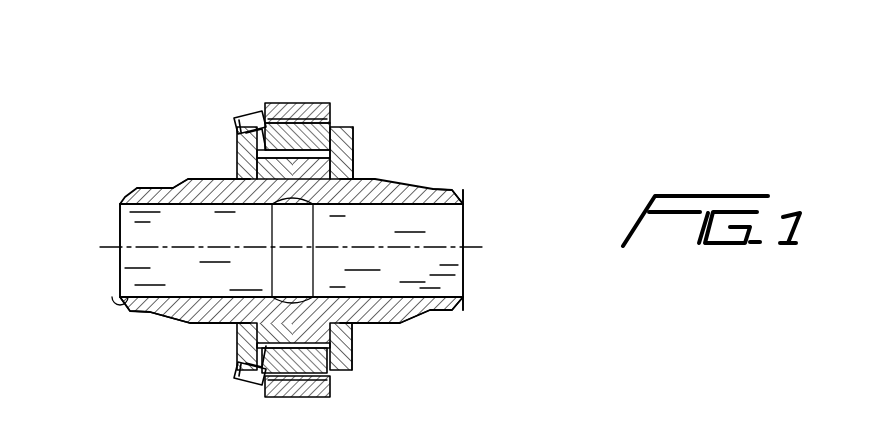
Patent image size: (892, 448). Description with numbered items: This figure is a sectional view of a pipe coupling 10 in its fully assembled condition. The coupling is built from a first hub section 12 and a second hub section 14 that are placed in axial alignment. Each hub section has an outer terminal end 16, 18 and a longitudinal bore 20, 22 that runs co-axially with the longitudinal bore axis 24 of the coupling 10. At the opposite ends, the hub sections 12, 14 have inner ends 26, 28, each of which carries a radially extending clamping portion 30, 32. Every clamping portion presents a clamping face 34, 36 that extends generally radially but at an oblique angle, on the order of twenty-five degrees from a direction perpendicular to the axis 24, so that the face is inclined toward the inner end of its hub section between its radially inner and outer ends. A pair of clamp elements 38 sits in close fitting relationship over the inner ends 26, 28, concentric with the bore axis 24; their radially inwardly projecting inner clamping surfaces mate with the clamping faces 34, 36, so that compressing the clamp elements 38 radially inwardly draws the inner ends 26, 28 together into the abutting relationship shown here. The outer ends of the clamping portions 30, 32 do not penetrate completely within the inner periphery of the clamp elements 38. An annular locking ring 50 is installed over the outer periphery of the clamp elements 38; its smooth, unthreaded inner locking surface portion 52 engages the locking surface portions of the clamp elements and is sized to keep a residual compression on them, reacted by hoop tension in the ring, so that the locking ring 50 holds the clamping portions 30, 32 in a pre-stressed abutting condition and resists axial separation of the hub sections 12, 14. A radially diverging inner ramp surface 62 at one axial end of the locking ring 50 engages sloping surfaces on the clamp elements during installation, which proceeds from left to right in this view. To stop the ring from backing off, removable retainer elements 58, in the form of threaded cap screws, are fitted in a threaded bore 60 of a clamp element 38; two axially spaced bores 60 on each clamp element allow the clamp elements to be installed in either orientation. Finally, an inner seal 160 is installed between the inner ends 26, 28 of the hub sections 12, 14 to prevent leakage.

The pipe coupling 10 is at (421, 147).
The first hub section 12 is at (172, 185).
The second hub section 14 is at (432, 184).
The outer terminal end 16 is at (118, 203).
The outer terminal end 18 is at (465, 203).
The longitudinal bore 20 is at (118, 296).
The longitudinal bore 22 is at (454, 292).
The longitudinal bore axis 24 is at (484, 248).
The inner end 26 is at (250, 205).
The inner end 28 is at (332, 204).
The clamping portion 30 is at (236, 170).
The clamping portion 32 is at (297, 192).
The clamping face 34 is at (234, 180).
The clamping face 36 is at (360, 168).
The clamp elements 38 is at (337, 125).
The locking ring 50 is at (302, 103).
The inner locking surface portion 52 is at (272, 103).
The retainer elements 58 is at (240, 116).
The threaded bore 60 is at (353, 128).
The ramp surface 62 is at (343, 380).
The inner seal 160 is at (314, 290).